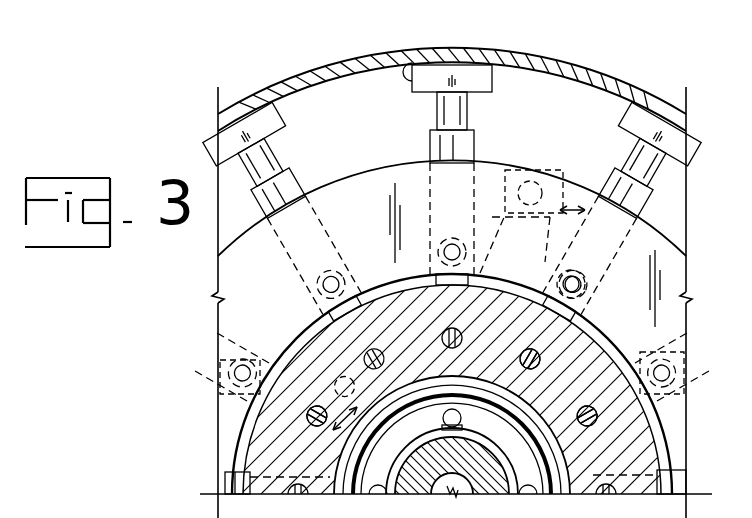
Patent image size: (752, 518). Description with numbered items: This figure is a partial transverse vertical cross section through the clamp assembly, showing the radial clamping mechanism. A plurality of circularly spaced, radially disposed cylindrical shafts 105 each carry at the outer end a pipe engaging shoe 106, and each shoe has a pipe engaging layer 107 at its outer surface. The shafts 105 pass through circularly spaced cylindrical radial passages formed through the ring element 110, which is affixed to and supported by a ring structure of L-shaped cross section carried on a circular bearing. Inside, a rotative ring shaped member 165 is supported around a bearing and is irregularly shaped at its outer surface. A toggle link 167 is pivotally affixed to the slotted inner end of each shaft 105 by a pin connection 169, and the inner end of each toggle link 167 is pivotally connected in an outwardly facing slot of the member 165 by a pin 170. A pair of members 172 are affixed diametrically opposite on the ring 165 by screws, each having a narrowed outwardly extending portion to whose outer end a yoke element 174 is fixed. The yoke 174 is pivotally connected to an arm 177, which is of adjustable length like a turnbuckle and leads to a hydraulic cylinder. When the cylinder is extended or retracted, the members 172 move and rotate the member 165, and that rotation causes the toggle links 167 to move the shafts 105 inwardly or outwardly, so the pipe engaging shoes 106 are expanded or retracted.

The cylindrical shaft 105 is at (474, 144).
The pipe engaging shoe 106 is at (397, 63).
The pipe engaging layer 107 is at (503, 63).
The ring element 110 is at (388, 172).
The rotative ring shaped member 165 is at (303, 333).
The toggle link 167 is at (582, 318).
The pin connection 169 is at (582, 284).
The pin 170 is at (547, 356).
The member 172 is at (543, 262).
The yoke element 174 is at (567, 172).
The arm 177 is at (565, 196).